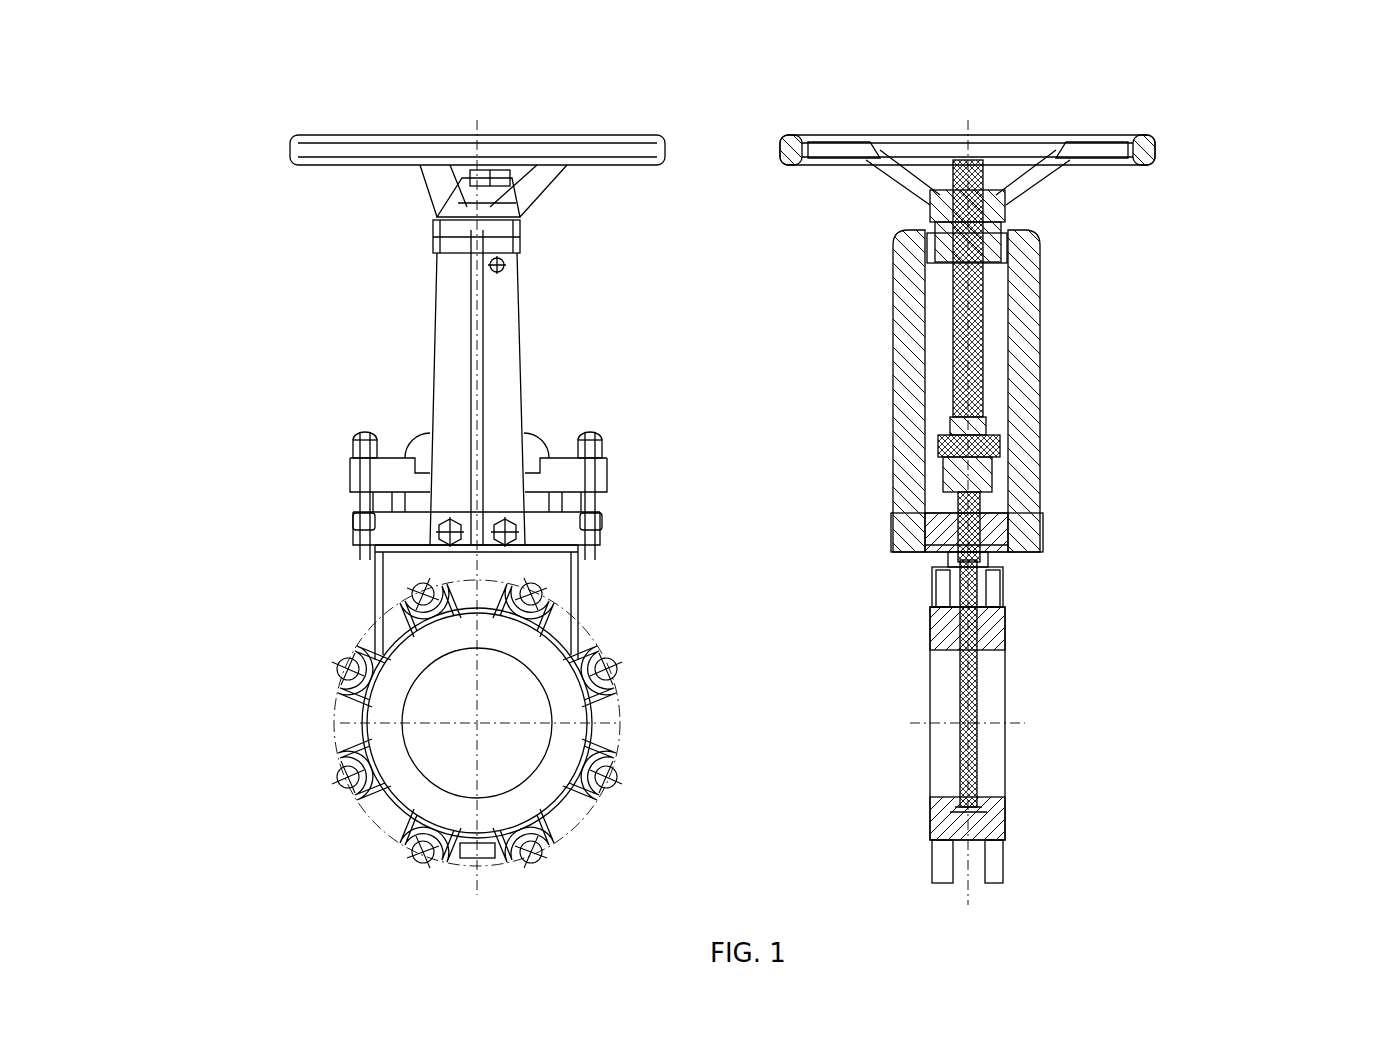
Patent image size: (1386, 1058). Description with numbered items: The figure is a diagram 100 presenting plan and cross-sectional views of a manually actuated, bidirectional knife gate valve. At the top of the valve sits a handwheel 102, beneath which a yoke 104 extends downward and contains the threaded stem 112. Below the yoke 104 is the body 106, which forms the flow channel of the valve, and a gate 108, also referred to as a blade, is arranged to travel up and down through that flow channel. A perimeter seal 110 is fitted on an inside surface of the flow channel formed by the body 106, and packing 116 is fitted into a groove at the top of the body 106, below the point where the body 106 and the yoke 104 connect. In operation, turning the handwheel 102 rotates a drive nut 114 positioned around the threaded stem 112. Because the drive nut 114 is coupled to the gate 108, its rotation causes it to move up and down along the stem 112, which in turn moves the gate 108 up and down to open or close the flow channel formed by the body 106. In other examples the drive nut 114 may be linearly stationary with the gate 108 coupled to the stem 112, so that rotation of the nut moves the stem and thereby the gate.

The diagram 100 is at (1232, 108).
The handwheel 102 is at (287, 152).
The yoke 104 is at (428, 343).
The body 106 is at (372, 590).
The gate 108 is at (478, 710).
The perimeter seal 110 is at (478, 797).
The stem 112 is at (987, 333).
The drive nut 114 is at (995, 243).
The packing 116 is at (987, 530).